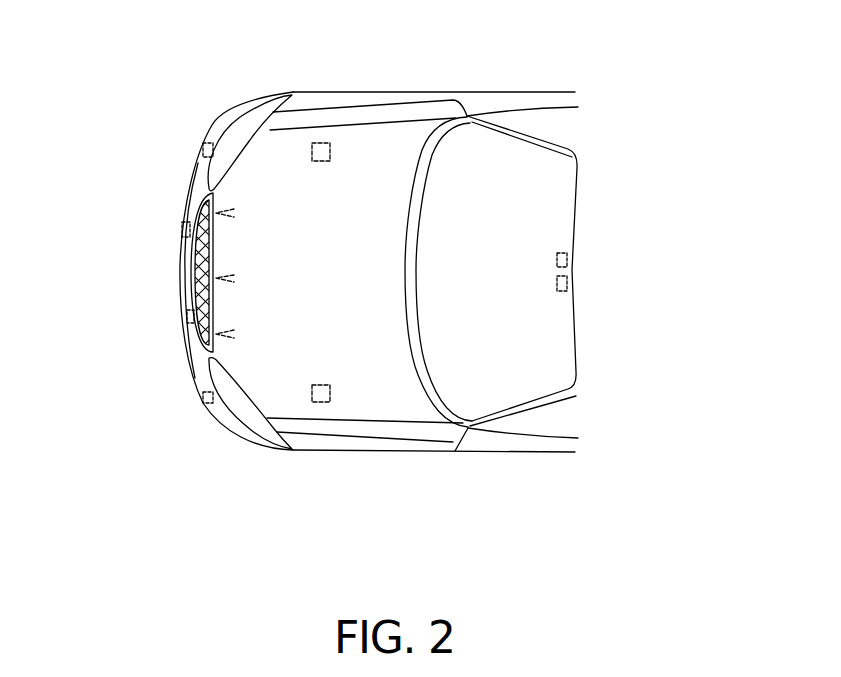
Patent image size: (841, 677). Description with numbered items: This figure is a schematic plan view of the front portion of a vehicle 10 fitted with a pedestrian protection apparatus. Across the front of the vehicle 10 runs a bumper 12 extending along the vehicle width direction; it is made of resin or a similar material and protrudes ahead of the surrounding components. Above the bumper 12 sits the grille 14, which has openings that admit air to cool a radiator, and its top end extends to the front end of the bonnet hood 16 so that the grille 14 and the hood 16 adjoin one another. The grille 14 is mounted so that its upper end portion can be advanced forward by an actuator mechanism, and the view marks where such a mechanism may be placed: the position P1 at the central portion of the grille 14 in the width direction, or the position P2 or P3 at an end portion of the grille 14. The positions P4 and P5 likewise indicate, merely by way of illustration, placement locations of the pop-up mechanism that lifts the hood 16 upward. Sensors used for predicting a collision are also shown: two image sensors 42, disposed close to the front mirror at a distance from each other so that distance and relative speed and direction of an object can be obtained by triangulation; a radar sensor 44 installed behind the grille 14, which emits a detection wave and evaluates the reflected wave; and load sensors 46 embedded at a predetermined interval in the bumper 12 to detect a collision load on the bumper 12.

The vehicle 10 is at (217, 77).
The bumper 12 is at (217, 413).
The grille 14 is at (196, 243).
The bonnet hood 16 is at (397, 148).
The image sensor 42 is at (567, 258).
The radar sensor 44 is at (184, 265).
The load sensor 46 is at (182, 226).
The position P1 is at (234, 279).
The position P2 is at (234, 214).
The position P3 is at (234, 335).
The position P4 is at (320, 142).
The position P5 is at (321, 403).